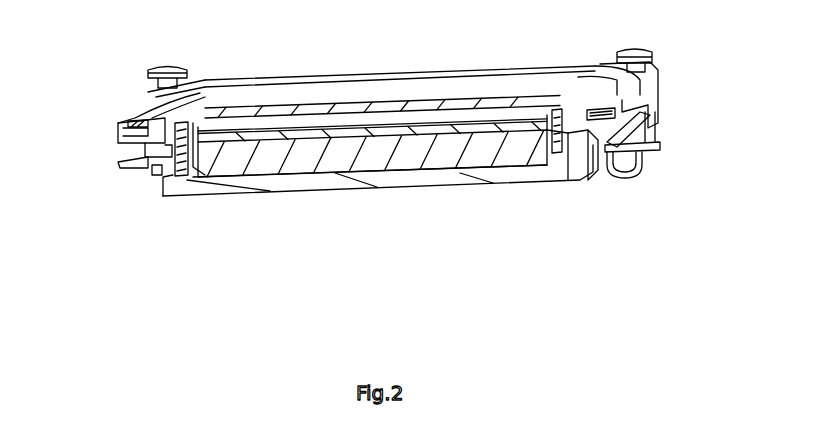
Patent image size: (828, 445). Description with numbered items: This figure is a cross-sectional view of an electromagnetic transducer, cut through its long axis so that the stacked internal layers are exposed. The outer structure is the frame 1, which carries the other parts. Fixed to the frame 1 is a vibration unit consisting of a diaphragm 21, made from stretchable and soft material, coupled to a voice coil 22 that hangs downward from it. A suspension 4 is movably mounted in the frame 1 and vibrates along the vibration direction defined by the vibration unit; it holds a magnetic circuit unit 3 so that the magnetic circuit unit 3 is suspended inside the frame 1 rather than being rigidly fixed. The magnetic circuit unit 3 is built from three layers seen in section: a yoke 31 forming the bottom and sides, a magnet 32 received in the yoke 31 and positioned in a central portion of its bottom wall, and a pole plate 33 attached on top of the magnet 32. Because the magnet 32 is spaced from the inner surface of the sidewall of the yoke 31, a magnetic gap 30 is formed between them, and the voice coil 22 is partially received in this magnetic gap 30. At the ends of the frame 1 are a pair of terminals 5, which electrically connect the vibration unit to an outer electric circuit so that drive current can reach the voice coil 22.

The frame 1 is at (660, 90).
The diaphragm 21 is at (157, 110).
The voice coil 22 is at (167, 176).
The suspension 4 is at (123, 160).
The terminals 5 is at (660, 153).
The magnetic gap 30 is at (186, 180).
The magnetic circuit unit 3 is at (372, 206).
The yoke 31 is at (285, 185).
The magnet 32 is at (345, 155).
The pole plate 33 is at (400, 133).